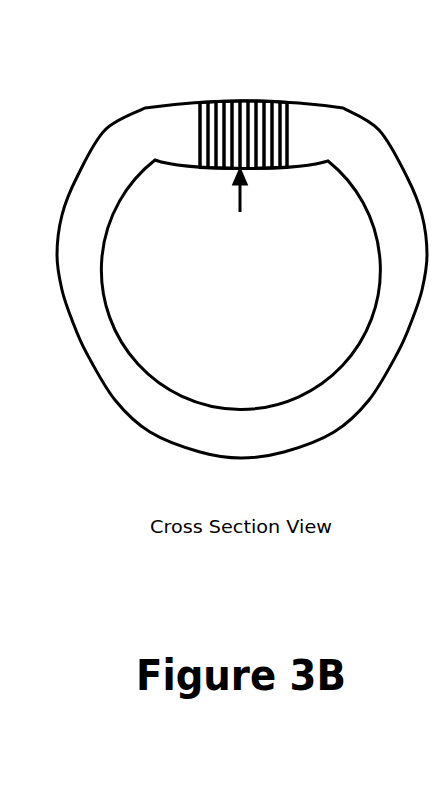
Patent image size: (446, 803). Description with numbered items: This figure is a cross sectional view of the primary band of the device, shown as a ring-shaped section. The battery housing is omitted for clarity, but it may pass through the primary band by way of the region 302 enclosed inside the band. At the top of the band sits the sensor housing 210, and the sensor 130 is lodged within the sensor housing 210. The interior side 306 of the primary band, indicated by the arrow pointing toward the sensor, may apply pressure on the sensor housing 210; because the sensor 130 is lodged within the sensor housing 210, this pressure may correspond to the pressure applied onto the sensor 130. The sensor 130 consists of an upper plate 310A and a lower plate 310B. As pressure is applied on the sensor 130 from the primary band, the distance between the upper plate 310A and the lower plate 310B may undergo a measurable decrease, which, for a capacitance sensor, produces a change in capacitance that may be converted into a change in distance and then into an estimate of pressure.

The sensor housing 210 is at (158, 107).
The sensor 130 is at (256, 102).
The upper plate 310A is at (283, 102).
The lower plate 310B is at (276, 170).
The interior side 306 is at (241, 206).
The region 302 is at (272, 313).